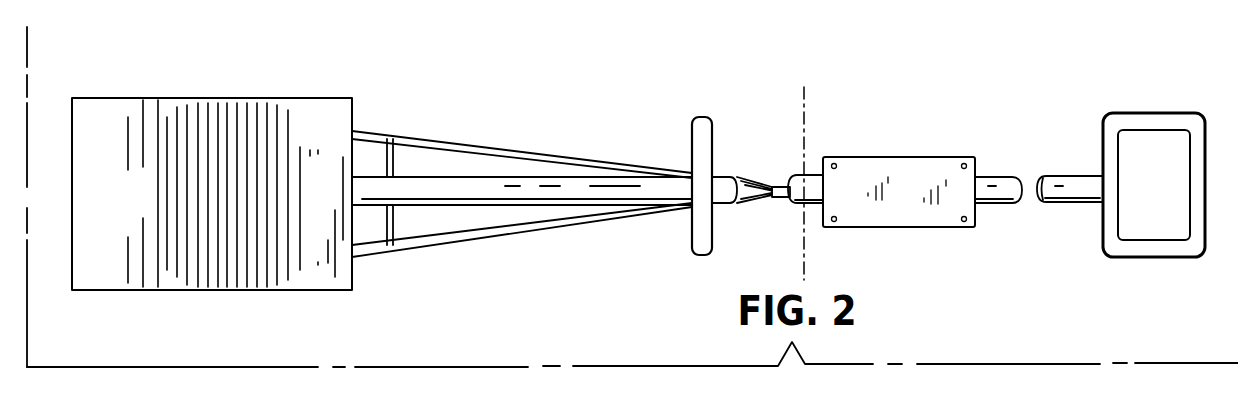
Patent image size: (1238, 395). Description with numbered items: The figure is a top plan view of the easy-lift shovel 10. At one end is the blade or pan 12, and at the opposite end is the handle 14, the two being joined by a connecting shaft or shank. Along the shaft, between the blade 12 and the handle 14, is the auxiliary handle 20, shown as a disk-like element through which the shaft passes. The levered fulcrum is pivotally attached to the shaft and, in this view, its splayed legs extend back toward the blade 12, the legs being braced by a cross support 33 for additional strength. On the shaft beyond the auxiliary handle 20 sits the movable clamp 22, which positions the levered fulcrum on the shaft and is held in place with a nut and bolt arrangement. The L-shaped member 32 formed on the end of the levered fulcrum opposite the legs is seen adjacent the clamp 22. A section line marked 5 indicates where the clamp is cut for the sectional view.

The easy-lift shovel 10 is at (392, 100).
The blade 12 is at (238, 97).
The handle 14 is at (1162, 113).
The auxiliary handle 20 is at (692, 118).
The movable clamp 22 is at (910, 157).
The L-shaped member 32 is at (780, 183).
The cross support 33 is at (395, 225).
The section line 5- 5 is at (794, 103).